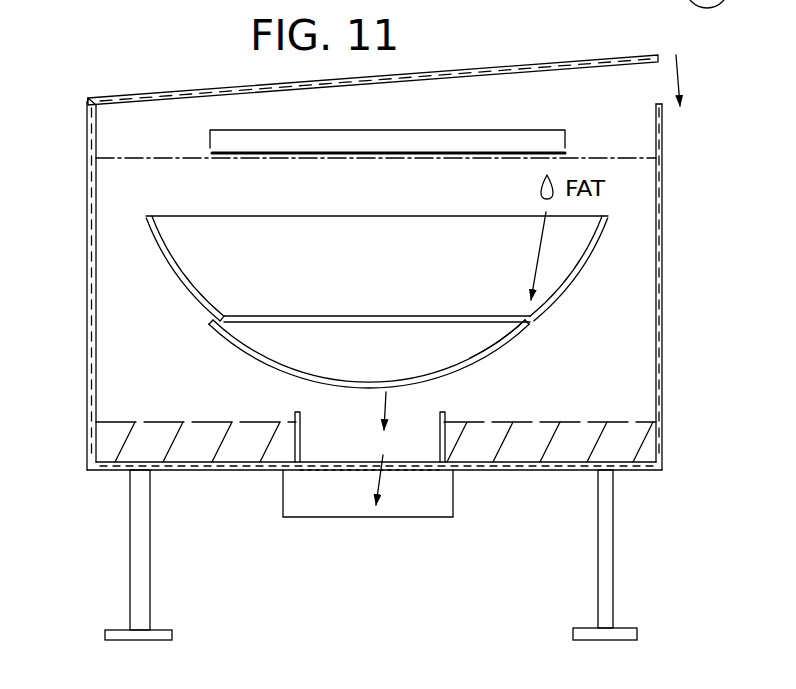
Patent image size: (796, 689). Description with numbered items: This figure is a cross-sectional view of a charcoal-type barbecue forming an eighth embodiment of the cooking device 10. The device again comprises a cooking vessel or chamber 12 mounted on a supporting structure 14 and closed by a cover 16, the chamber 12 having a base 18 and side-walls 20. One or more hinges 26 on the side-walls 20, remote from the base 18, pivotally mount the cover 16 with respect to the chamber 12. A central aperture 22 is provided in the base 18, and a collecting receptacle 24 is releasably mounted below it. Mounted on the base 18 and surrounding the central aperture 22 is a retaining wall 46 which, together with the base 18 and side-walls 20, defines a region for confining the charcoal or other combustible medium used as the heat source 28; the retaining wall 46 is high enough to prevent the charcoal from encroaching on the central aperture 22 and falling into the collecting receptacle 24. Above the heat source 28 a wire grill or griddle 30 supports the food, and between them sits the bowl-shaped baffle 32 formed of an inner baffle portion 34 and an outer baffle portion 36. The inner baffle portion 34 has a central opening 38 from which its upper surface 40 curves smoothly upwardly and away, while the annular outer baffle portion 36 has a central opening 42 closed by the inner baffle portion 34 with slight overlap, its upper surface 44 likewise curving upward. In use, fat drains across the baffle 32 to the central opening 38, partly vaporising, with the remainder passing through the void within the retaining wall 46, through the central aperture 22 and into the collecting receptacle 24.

The cooking device 10 is at (695, 258).
The cooking vessel or chamber 12 is at (660, 331).
The supporting structure 14 is at (613, 527).
The cover 16 is at (208, 86).
The base 18 is at (545, 471).
The side-walls 20 is at (663, 143).
The central aperture 22 is at (328, 477).
The collecting receptacle 24 is at (408, 518).
The hinges 26 is at (88, 100).
The heat source 28 is at (550, 428).
The griddle 30 is at (632, 154).
The baffle 32 is at (212, 340).
The inner baffle portion 34 is at (485, 352).
The outer baffle portion 36 is at (568, 280).
The central opening 38 is at (357, 384).
The upper surface 40 is at (272, 358).
The central opening 42 is at (230, 312).
The upper surface 44 is at (182, 262).
The retaining wall 46 is at (308, 418).